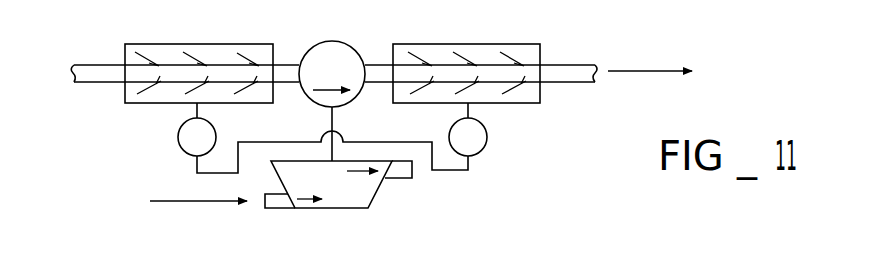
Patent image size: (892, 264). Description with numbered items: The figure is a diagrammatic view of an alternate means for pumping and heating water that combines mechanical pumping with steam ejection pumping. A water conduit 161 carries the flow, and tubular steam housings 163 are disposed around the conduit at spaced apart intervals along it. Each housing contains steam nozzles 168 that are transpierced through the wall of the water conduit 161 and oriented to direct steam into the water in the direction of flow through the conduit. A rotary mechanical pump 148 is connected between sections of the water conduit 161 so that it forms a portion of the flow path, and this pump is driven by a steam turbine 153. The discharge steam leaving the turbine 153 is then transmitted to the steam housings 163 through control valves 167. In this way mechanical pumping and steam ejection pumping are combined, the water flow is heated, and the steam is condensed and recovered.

The rotary mechanical pump 148 is at (340, 41).
The steam turbine 153 is at (378, 197).
The water conduit 161 is at (567, 62).
The tubular steam housing 163 is at (163, 43).
The control valve 167 is at (178, 137).
The steam nozzle 168 is at (241, 52).